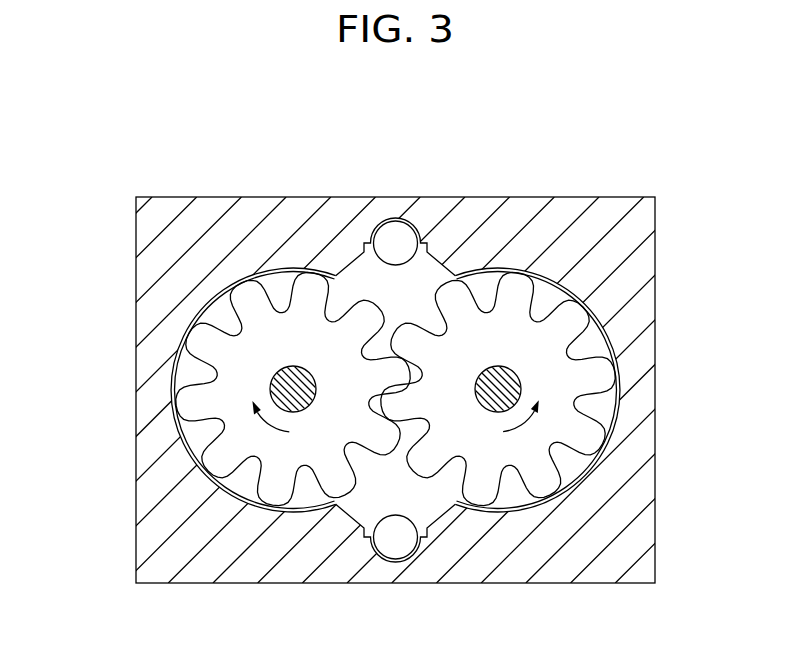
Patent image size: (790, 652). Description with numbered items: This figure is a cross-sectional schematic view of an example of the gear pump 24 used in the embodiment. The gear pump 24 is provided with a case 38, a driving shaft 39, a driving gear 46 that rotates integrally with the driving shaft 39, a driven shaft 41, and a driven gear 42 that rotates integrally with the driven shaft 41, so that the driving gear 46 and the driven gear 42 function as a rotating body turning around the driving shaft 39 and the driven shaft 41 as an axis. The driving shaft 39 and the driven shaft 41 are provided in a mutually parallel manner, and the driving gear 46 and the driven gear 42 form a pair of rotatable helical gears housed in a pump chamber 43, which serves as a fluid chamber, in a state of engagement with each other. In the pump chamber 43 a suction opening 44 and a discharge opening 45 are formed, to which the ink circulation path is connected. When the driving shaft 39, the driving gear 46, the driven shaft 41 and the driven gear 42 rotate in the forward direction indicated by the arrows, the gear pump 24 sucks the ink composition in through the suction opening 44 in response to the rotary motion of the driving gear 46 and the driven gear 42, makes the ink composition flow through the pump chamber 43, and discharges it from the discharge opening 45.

The gear pump 24 is at (142, 178).
The case 38 is at (210, 205).
The driving shaft 39 is at (503, 377).
The driven shaft 41 is at (280, 378).
The driven gear 42 is at (200, 400).
The pump chamber 43 is at (356, 266).
The suction opening 44 is at (373, 538).
The discharge opening 45 is at (412, 248).
The driving gear 46 is at (592, 372).